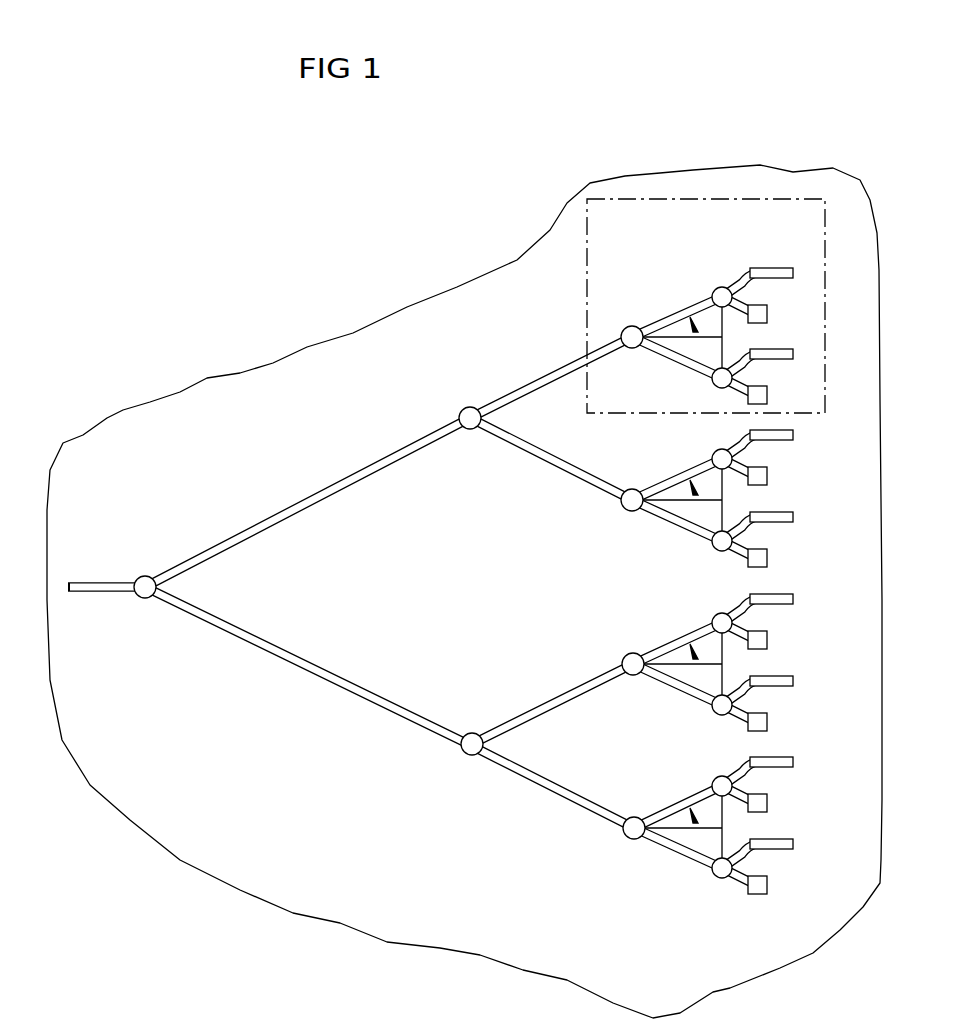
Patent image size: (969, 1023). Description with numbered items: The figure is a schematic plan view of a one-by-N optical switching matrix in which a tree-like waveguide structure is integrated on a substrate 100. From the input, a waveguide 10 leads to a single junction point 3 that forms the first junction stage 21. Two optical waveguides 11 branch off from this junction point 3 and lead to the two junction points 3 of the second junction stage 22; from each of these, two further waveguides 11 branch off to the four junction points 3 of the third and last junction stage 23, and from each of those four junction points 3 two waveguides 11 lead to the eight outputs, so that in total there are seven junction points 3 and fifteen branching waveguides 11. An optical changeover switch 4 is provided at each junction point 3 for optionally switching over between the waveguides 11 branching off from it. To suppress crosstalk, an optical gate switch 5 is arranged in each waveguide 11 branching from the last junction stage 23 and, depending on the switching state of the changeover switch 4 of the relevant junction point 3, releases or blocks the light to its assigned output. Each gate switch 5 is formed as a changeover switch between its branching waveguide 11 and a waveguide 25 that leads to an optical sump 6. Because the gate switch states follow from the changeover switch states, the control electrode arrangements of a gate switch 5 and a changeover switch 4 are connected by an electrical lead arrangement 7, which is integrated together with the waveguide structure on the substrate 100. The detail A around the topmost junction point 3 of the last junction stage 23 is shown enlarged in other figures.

The substrate 100 is at (350, 333).
The waveguide 10 is at (72, 588).
The optical waveguides 11 is at (548, 378).
The junction points 3 is at (468, 406).
The optical switch 4 is at (470, 430).
The optical gate switch 5 is at (718, 286).
The optical sump 6 is at (767, 314).
The electrical lead arrangement 7 is at (690, 303).
The waveguide 25 is at (740, 300).
The first junction stage 21 is at (155, 627).
The second junction stage 22 is at (480, 788).
The third junction stage 23 is at (639, 890).
The detail A is at (586, 272).